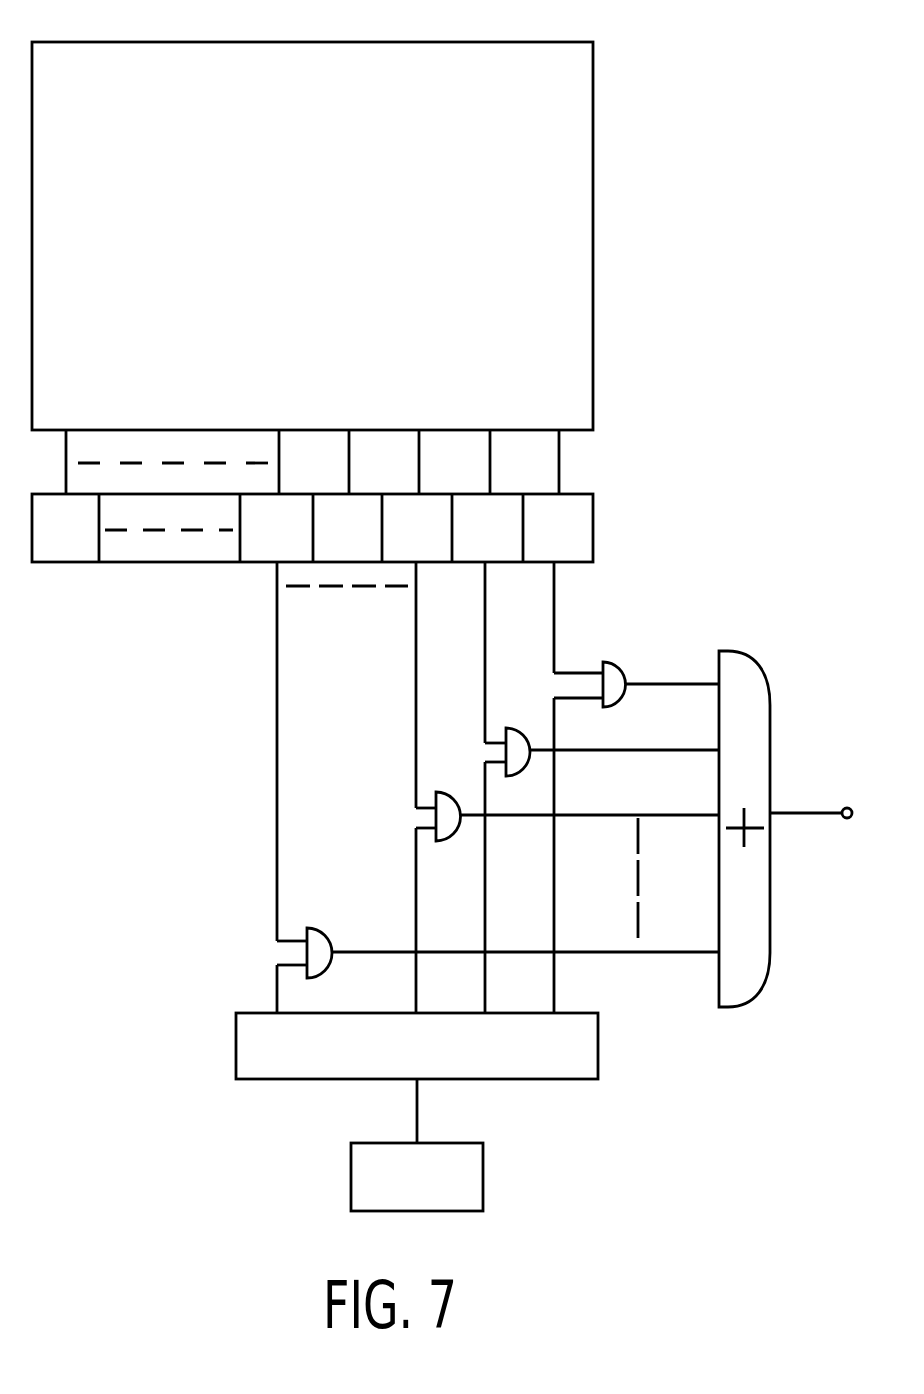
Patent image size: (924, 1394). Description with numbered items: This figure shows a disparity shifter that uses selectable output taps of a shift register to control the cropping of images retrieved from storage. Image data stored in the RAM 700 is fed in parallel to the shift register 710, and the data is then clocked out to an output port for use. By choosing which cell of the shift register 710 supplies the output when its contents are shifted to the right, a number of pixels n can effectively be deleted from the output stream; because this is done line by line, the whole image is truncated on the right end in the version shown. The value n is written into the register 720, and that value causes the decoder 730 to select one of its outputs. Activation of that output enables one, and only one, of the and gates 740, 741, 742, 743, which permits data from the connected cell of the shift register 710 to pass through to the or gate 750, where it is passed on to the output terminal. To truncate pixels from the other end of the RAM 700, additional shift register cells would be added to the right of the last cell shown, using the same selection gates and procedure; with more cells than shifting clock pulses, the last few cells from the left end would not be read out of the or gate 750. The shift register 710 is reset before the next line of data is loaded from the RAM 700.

The RAM 700 is at (290, 270).
The shift register 710 is at (580, 494).
The register 720 is at (483, 1175).
The decoder 730 is at (598, 1043).
The and gate 740 is at (310, 928).
The and gate 741 is at (438, 792).
The and gate 742 is at (508, 728).
The and gate 743 is at (607, 662).
The or gate 750 is at (750, 658).